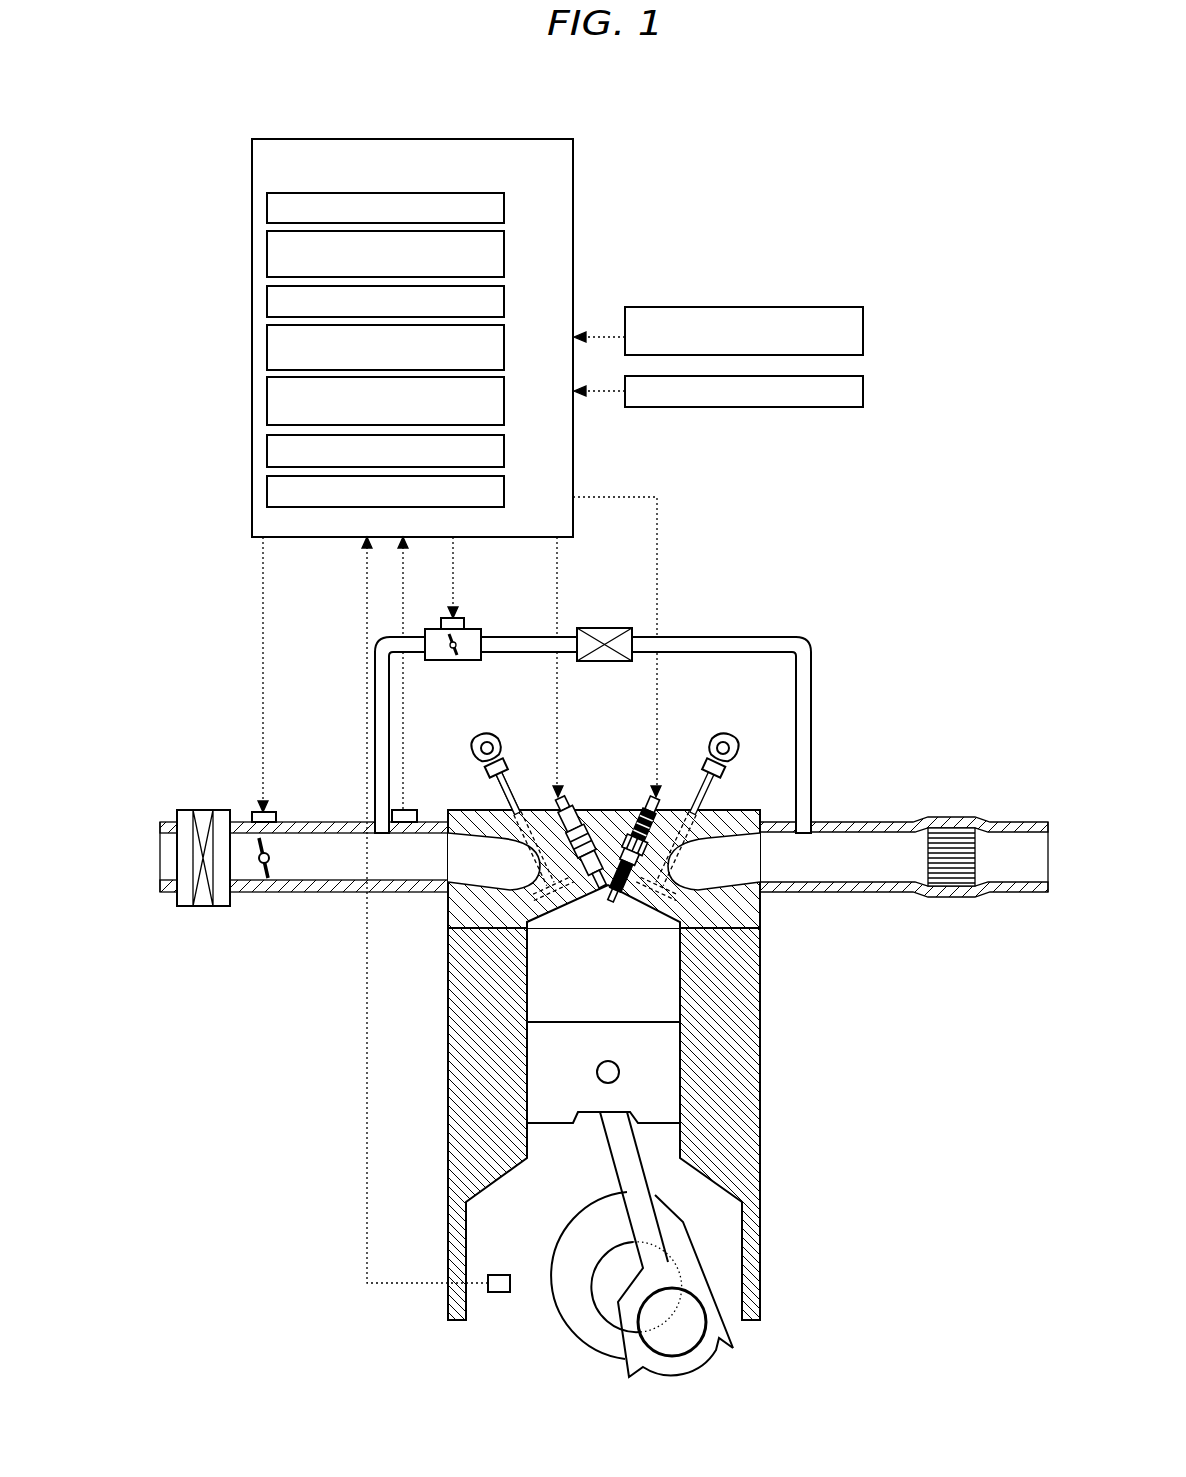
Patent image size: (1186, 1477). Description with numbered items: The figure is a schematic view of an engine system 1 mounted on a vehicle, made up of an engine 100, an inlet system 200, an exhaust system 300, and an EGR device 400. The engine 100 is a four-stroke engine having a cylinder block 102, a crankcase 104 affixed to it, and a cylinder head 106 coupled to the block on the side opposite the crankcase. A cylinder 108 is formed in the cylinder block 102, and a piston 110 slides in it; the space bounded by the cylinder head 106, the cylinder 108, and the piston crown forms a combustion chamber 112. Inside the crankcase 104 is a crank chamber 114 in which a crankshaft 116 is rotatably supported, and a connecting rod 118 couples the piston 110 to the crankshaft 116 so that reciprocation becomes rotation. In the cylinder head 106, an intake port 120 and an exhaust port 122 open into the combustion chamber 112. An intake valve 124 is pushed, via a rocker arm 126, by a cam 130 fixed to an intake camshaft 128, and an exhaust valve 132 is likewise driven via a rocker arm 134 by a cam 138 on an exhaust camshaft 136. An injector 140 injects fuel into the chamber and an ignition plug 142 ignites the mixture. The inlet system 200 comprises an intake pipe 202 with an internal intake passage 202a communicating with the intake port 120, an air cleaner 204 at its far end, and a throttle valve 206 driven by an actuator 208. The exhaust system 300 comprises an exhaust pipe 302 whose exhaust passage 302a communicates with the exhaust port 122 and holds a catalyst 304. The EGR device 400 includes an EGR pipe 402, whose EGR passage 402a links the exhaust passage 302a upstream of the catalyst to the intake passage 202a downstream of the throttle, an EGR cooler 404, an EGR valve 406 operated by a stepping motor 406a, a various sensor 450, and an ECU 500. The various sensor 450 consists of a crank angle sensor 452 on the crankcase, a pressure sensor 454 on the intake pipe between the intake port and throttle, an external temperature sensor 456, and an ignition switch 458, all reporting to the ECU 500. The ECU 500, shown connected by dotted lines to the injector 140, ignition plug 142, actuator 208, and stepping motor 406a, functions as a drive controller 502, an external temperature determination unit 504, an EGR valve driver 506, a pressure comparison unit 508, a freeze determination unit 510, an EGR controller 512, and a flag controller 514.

The engine system 1 is at (319, 127).
The engine 100 is at (612, 736).
The cylinder block 102 is at (761, 950).
The crankcase 104 is at (758, 1113).
The cylinder head 106 is at (725, 810).
The cylinder 108 is at (681, 983).
The piston 110 is at (577, 1022).
The combustion chamber 112 is at (583, 966).
The crank chamber 114 is at (521, 1204).
The crankshaft 116 is at (703, 1255).
The connecting rod 118 is at (613, 1170).
The intake port 120 is at (478, 890).
The exhaust port 122 is at (735, 885).
The intake valve 124 is at (504, 790).
The rocker arm 126 is at (502, 766).
The intake camshaft 128 is at (498, 738).
The cam 130 is at (484, 735).
The exhaust valve 132 is at (704, 789).
The rocker arm 134 is at (708, 766).
The exhaust camshaft 136 is at (727, 747).
The cam 138 is at (720, 735).
The injector 140 is at (556, 811).
The ignition plug 142 is at (640, 815).
The inlet system 200 is at (219, 736).
The intake pipe 202 is at (304, 896).
The intake passage 202a is at (294, 870).
The air cleaner 204 is at (200, 906).
The throttle valve 206 is at (266, 882).
The actuator 208 is at (254, 808).
The exhaust system 300 is at (942, 736).
The exhaust pipe 302 is at (904, 828).
The exhaust passage 302a is at (1015, 846).
The catalyst 304 is at (928, 859).
The EGR device 400 is at (606, 135).
The EGR pipe 402 is at (593, 707).
The EGR passage 402a is at (697, 638).
The EGR cooler 404 is at (605, 628).
The EGR valve 406 is at (450, 660).
The stepping motor 406a is at (465, 626).
The various sensor 450 is at (744, 275).
The crank angle sensor 452 is at (498, 1292).
The pressure sensor 454 is at (413, 808).
The external temperature sensor 456 is at (864, 338).
The ignition switch 458 is at (864, 391).
The ECU 500 is at (515, 137).
The drive controller 502 is at (505, 210).
The external temperature determination unit 504 is at (505, 258).
The EGR valve driver 506 is at (505, 302).
The pressure comparison unit 508 is at (505, 351).
The freeze determination unit 510 is at (505, 405).
The EGR controller 512 is at (505, 453).
The flag controller 514 is at (505, 494).